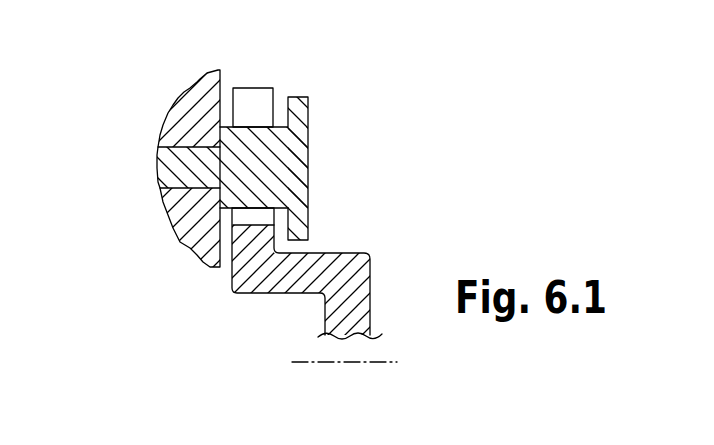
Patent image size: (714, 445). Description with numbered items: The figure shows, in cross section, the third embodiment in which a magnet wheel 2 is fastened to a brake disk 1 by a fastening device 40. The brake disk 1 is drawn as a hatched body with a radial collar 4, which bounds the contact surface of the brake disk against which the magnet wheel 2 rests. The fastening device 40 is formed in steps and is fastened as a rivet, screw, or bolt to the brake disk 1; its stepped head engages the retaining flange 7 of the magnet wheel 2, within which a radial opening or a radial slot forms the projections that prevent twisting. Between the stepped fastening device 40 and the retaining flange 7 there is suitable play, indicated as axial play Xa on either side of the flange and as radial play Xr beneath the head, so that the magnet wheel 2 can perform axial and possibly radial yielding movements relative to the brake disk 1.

The brake disk 1 is at (136, 167).
The radial collar 4 is at (150, 125).
The fastening device 40 is at (320, 137).
The retaining flange 7 is at (252, 103).
The magnet wheel 2 is at (348, 293).
The axial play Xa is at (227, 100).
The radial play Xr is at (253, 217).